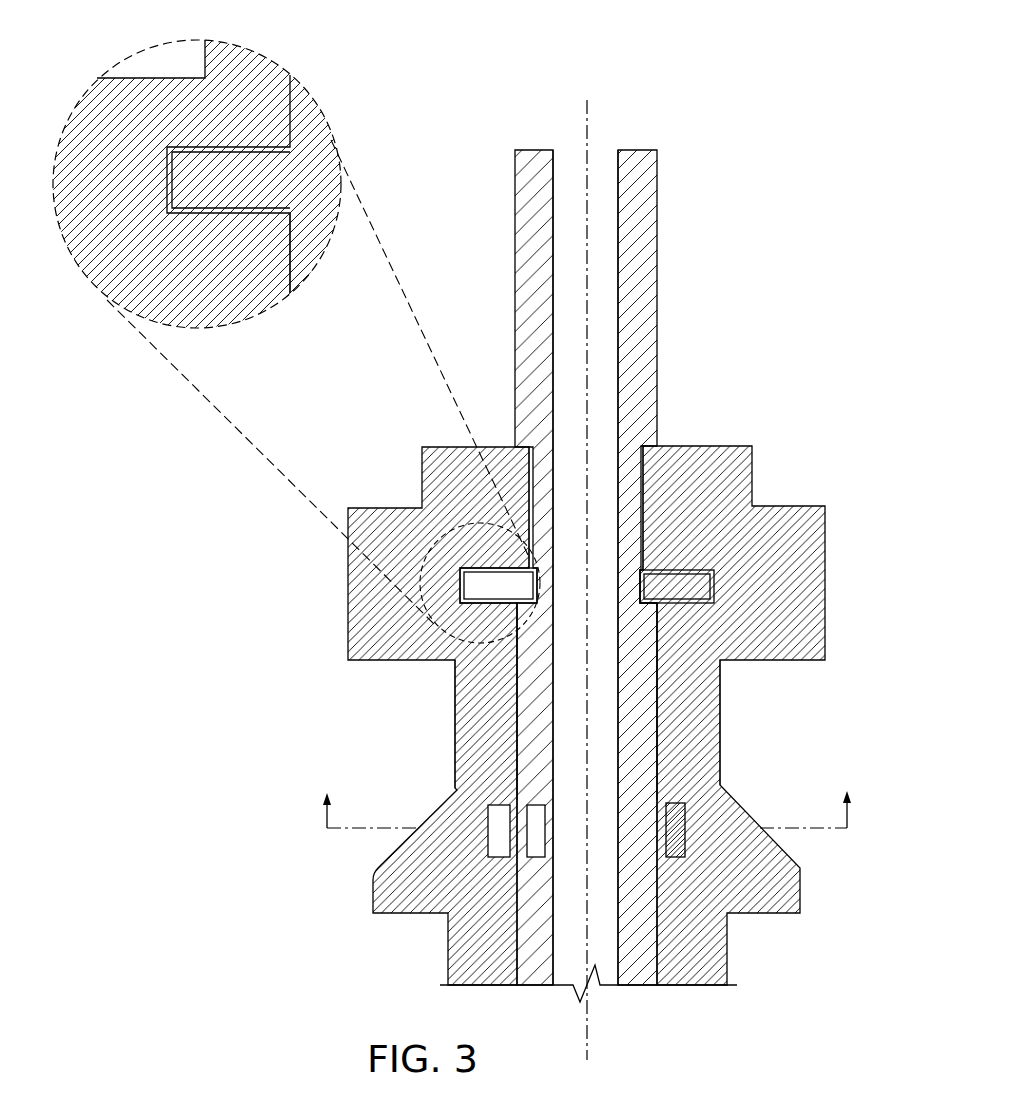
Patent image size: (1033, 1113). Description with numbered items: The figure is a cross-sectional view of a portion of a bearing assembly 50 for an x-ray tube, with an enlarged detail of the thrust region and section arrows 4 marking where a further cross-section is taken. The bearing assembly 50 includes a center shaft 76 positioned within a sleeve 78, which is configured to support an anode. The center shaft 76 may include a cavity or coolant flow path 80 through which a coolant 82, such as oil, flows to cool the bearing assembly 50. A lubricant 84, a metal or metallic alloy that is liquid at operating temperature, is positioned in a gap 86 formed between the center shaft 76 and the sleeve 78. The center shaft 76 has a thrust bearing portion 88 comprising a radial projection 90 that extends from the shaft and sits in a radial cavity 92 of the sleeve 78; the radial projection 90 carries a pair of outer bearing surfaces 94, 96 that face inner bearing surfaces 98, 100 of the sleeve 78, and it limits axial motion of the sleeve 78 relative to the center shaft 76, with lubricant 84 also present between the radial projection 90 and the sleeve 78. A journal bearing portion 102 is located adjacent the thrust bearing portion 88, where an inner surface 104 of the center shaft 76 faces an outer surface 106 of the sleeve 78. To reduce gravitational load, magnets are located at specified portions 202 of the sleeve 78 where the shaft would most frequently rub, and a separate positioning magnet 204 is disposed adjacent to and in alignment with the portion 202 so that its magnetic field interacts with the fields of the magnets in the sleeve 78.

The section line 4- 4 is at (587, 797).
The bearing assembly 50 is at (355, 747).
The center shaft 76 is at (515, 200).
The sleeve 78 is at (442, 447).
The coolant flow path 80 is at (587, 93).
The coolant 82 is at (573, 371).
The lubricant 84 is at (293, 249).
The gap 86 is at (494, 718).
The thrust bearing portion 88 is at (434, 588).
The radial projection 90 is at (477, 563).
The radial cavity 92 is at (192, 132).
The outer bearing surface 94 is at (62, 202).
The outer bearing surface 96 is at (270, 162).
The inner bearing surface 98 is at (93, 284).
The inner bearing surface 100 is at (267, 75).
The journal bearing portion 102 is at (482, 752).
The inner surface 104 is at (297, 278).
The outer surface 106 is at (284, 281).
The specified portion of the sleeve 202 is at (487, 847).
The positioning magnet 204 is at (533, 860).